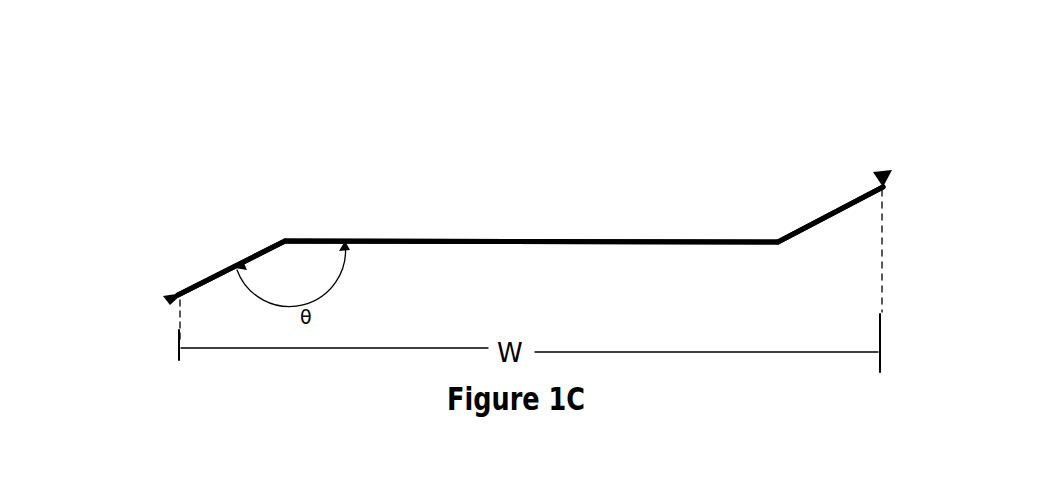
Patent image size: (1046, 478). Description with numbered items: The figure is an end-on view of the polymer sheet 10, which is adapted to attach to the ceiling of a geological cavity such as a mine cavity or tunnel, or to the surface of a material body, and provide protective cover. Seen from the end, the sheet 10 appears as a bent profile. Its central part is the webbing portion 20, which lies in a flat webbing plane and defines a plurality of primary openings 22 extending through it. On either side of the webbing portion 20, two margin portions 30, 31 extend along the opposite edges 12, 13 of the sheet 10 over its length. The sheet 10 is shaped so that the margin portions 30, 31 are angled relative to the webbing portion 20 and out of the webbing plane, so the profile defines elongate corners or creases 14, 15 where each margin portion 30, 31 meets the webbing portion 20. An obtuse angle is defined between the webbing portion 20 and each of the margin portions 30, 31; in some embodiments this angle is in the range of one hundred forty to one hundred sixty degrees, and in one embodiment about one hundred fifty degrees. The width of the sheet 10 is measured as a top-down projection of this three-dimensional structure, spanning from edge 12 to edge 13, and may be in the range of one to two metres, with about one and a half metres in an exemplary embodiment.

The sheet 10 is at (258, 104).
The edge 12 is at (166, 299).
The edge 13 is at (884, 176).
The corner or crease 14 is at (281, 233).
The corner or crease 15 is at (777, 242).
The webbing portion 20 is at (545, 212).
The primary openings 22 is at (600, 259).
The margin portion 30 is at (203, 282).
The margin portion 31 is at (830, 230).